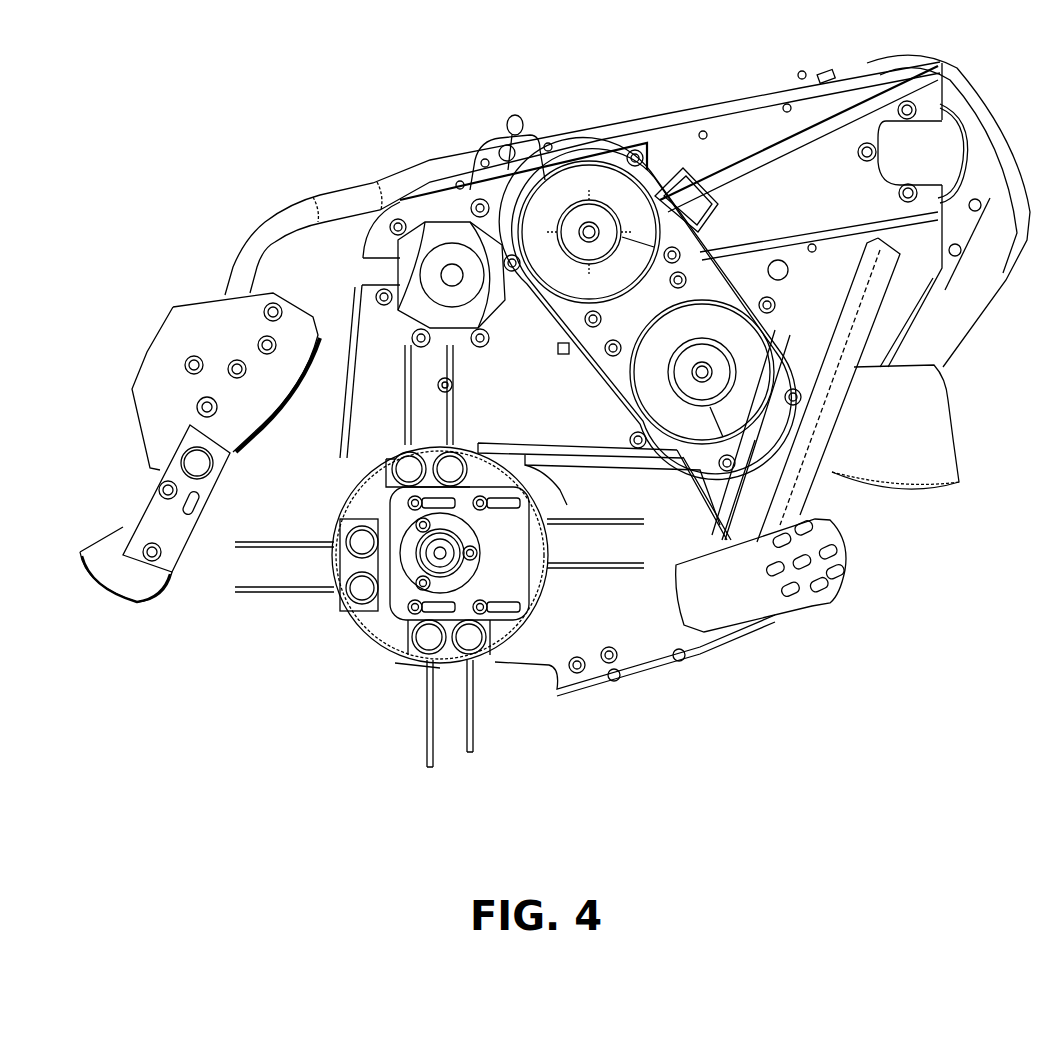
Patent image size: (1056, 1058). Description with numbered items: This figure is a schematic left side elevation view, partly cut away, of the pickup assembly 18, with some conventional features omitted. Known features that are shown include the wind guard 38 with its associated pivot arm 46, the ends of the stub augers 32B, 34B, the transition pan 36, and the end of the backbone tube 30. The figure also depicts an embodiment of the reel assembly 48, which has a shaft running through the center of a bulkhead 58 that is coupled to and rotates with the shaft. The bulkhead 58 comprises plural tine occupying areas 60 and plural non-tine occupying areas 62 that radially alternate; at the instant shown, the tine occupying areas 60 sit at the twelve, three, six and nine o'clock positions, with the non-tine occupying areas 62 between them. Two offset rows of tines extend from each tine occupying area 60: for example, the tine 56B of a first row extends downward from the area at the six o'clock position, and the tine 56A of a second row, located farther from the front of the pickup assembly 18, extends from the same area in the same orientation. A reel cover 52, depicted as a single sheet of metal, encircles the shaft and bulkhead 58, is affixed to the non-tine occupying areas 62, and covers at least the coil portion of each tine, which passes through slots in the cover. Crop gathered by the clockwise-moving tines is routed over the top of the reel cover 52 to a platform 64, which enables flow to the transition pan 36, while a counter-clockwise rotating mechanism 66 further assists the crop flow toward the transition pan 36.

The pickup assembly 18 is at (186, 126).
The pivot arm 46 is at (353, 186).
The rotating mechanism 66 is at (413, 232).
The stub auger 32B is at (600, 185).
The stub auger 34B is at (724, 316).
The wind guard 38 is at (150, 352).
The bulkhead 58 is at (378, 500).
The tine occupying area 60 is at (283, 561).
The reel cover 52 is at (342, 606).
The non-tine occupying area 62 is at (357, 666).
The tine 56B is at (433, 728).
The tine 56A is at (473, 750).
The reel assembly 48 is at (533, 715).
The platform 64 is at (522, 447).
The backbone tube 30 is at (809, 600).
The transition pan 36 is at (917, 485).